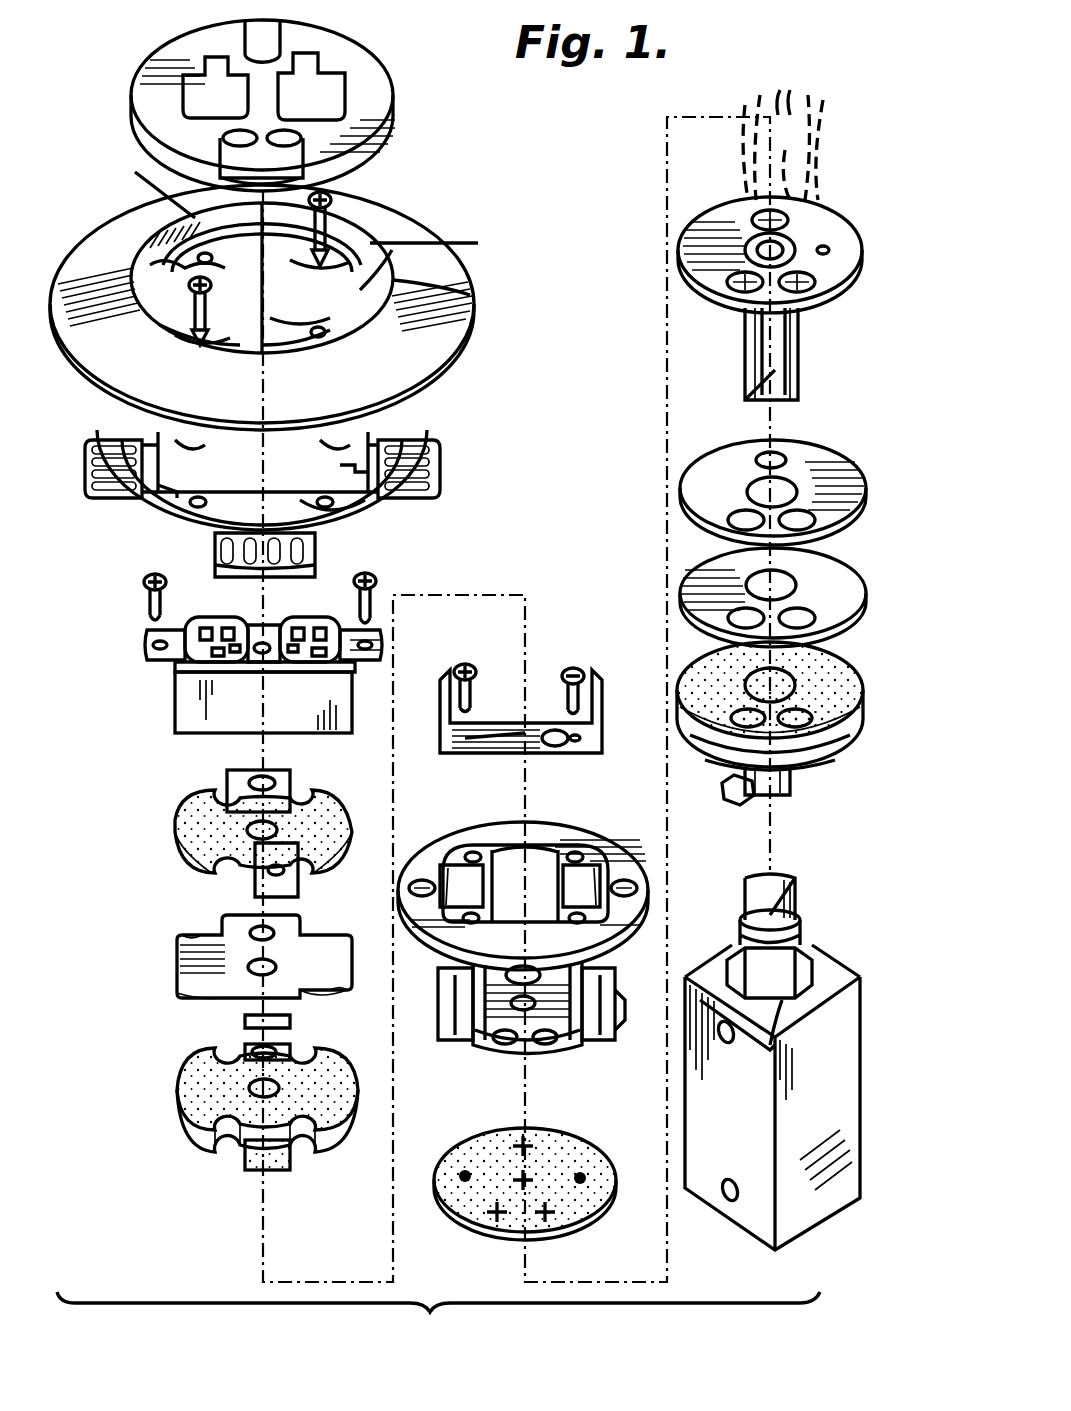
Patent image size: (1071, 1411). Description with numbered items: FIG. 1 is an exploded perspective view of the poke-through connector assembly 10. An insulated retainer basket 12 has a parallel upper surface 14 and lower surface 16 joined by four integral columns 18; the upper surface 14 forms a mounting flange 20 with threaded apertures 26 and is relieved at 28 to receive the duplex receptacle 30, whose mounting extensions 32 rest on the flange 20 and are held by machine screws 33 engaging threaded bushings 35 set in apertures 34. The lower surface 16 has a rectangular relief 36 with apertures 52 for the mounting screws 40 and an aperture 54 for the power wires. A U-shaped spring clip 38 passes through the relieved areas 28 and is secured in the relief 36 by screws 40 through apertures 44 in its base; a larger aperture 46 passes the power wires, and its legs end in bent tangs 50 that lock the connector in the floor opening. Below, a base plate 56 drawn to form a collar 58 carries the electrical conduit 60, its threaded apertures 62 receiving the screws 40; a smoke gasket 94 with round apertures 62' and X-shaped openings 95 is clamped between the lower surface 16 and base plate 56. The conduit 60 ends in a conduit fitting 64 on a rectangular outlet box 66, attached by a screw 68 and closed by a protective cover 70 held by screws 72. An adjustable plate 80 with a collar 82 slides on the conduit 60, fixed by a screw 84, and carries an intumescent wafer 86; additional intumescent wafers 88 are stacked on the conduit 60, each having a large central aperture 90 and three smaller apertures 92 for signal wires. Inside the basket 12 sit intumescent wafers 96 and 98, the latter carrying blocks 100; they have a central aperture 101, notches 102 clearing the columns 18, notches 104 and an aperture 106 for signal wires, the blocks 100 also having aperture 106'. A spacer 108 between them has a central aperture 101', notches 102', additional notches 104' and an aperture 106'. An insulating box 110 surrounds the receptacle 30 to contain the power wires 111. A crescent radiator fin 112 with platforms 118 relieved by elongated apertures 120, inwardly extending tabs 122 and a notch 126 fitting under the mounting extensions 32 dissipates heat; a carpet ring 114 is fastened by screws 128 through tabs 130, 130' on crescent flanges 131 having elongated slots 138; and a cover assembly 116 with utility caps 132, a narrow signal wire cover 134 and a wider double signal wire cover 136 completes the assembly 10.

The poke-through connector assembly 10 is at (438, 1316).
The insulated retainer basket 12 is at (608, 1025).
The upper surface 14 is at (566, 838).
The lower surface 16 is at (500, 1045).
The integral columns 18 is at (430, 1070).
The mounting flange 20 is at (428, 850).
The aperture 26 is at (495, 808).
The relieved area 28 is at (572, 888).
The duplex receptacle 30 is at (232, 625).
The mounting extensions 32 is at (150, 660).
The machine screws 33 is at (143, 600).
The apertures 34 is at (626, 880).
The threaded bushings 35 is at (624, 896).
The relief 36 is at (548, 1044).
The spring clip 38 is at (565, 750).
The mounting screws 40 is at (573, 668).
The apertures 44 is at (466, 725).
The larger aperture 46 is at (490, 753).
The tangs 50 is at (445, 690).
The apertures 52 is at (468, 1000).
The aperture 54 is at (455, 975).
The base plate 56 is at (705, 225).
The collar 58 is at (770, 320).
The electrical conduit 60 is at (775, 378).
The threaded apertures 62 is at (732, 237).
The round apertures 62' is at (521, 1214).
The conduit fitting 64 is at (800, 940).
The outlet box 66 is at (772, 1097).
The screw 68 is at (765, 955).
The protective cover 70 is at (760, 1155).
The screws 72 is at (728, 1045).
The adjustable plate 80 is at (792, 775).
The collar 82 is at (768, 797).
The screw 84 is at (728, 800).
The intumescent wafer 86 is at (808, 745).
The additional intumescent wafers 88 is at (712, 465).
The large central aperture 90 is at (752, 575).
The smaller apertures 92 is at (530, 970).
The smoke gasket 94 is at (560, 1160).
The X-shaped openings 95 is at (520, 1145).
The intumescent wafer 96 is at (190, 1092).
The intumescent wafer 98 is at (188, 825).
The blocks of intumescent material 100 is at (280, 815).
The central aperture 101 is at (178, 1035).
The central aperture 101' is at (227, 963).
The notches 102 is at (187, 975).
The notches 102' is at (193, 972).
The additional notches 104 is at (291, 1043).
The additional notches 104' is at (279, 1009).
The aperture 106 is at (278, 901).
The aperture 106' is at (301, 950).
The spacer 108 is at (178, 940).
The box 110 is at (263, 702).
The electrical power wires 111 is at (790, 130).
The radiator fin 112 is at (355, 440).
The carpet ring 114 is at (445, 335).
The cover assembly 116 is at (180, 45).
The platforms 118 is at (425, 448).
The elongated apertures 120 is at (105, 448).
The inwardly extending tabs 122 is at (355, 495).
The notch 126 is at (340, 467).
The screws 128 is at (350, 228).
The tabs 130 is at (217, 268).
The clamp ring 130' is at (293, 297).
The crescent shaped flanges 131 is at (440, 292).
The utility caps 132 is at (190, 95).
The individual electrical signal wire cover 134 is at (270, 28).
The double electrical signal wire cover 136 is at (290, 162).
The elongated slots 138 is at (309, 202).